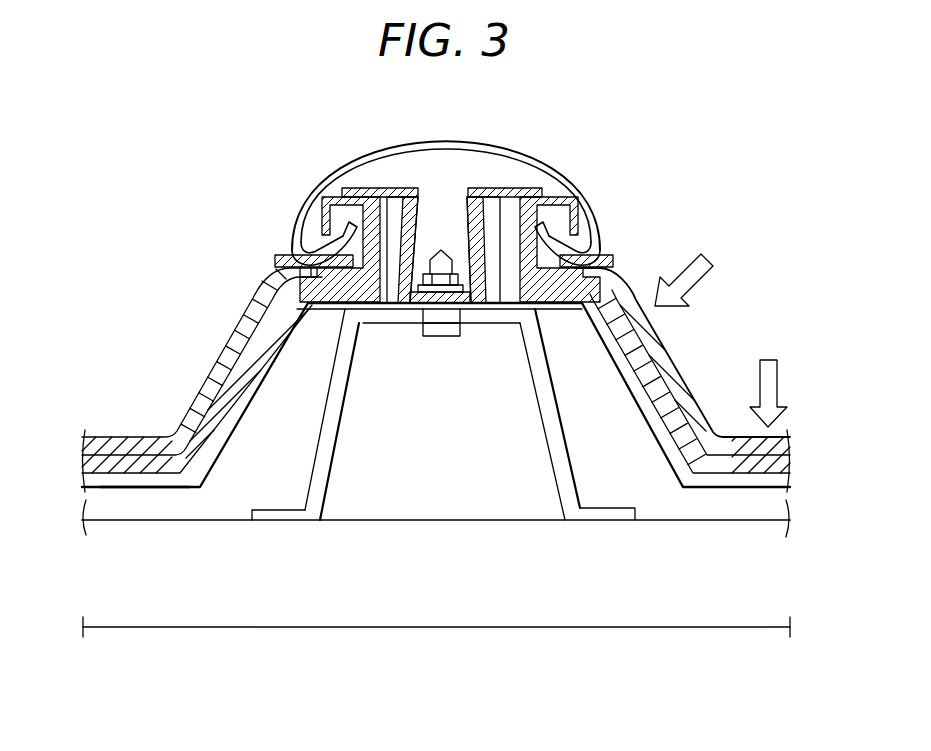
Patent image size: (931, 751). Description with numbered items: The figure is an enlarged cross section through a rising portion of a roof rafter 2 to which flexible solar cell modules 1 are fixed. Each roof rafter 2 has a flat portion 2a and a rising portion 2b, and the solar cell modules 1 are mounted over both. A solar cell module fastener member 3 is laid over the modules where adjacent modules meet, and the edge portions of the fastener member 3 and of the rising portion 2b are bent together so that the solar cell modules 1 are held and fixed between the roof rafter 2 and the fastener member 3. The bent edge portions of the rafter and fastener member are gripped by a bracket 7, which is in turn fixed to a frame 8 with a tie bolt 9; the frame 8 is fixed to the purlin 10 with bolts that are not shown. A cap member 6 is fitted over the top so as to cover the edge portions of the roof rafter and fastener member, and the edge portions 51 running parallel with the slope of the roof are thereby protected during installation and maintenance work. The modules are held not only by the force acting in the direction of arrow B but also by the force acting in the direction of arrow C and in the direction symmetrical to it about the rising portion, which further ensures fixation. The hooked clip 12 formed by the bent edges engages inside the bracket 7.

The solar cell module 1 is at (215, 367).
The roof rafter 2 is at (181, 489).
The flat portion 2a is at (144, 505).
The rising portion 2b is at (291, 370).
The solar cell module fastener member 3 is at (118, 446).
The cap member 6 is at (488, 143).
The bracket 7 is at (405, 188).
The frame 8 is at (568, 452).
The tie bolt 9 is at (443, 338).
The purlin 10 is at (743, 613).
The clip hook 12 is at (318, 232).
The edge portion 51 is at (373, 290).
The arrow B is at (777, 393).
The arrow C is at (684, 275).